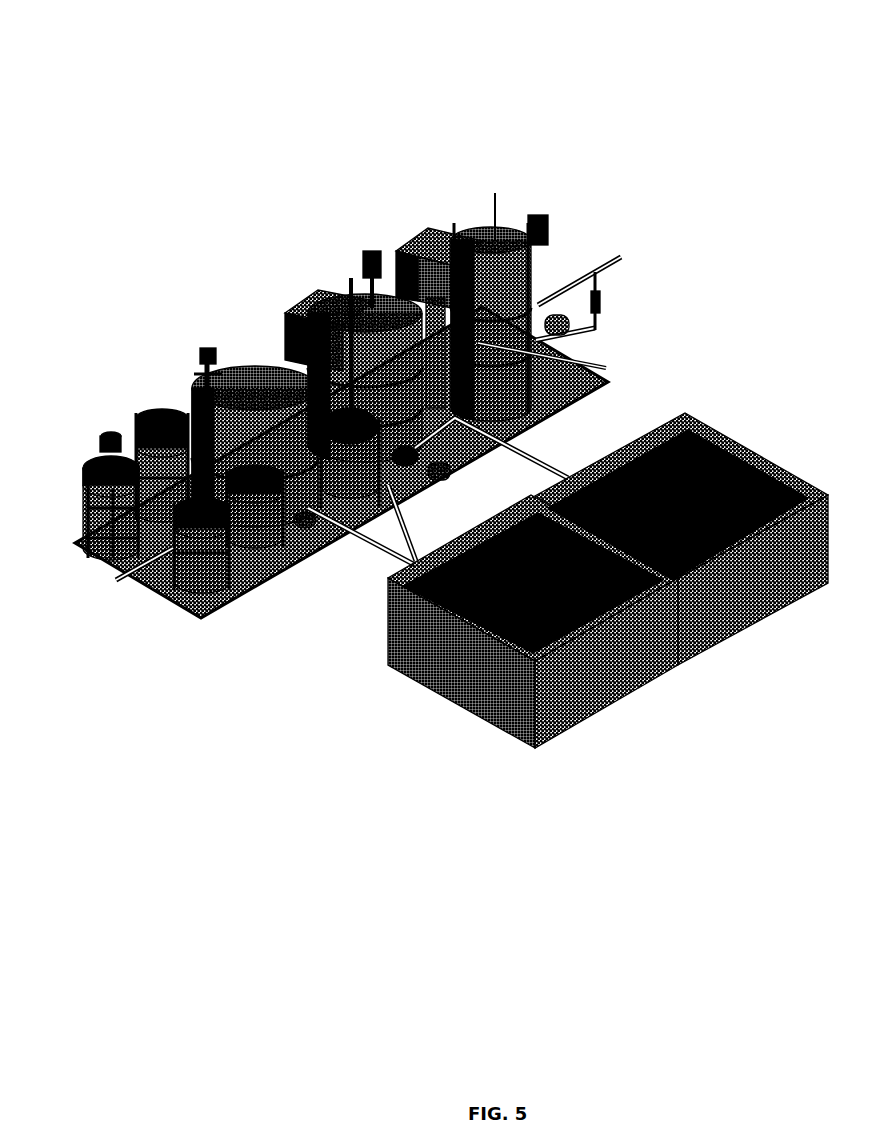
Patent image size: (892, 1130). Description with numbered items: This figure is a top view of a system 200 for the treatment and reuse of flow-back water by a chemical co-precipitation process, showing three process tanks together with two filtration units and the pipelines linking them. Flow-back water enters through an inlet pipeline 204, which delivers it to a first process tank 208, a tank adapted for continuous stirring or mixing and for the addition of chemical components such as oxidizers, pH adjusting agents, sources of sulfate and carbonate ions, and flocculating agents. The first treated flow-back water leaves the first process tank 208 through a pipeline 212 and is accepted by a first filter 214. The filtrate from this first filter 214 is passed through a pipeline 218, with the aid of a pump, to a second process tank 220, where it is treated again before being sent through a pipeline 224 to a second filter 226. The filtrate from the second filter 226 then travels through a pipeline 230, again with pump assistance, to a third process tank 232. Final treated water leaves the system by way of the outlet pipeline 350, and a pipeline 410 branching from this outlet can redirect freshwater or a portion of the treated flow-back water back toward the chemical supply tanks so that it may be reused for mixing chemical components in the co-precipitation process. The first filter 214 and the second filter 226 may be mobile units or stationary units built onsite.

The system 200 is at (665, 72).
The inlet pipeline 204 is at (108, 570).
The first process tank 208 is at (255, 367).
The pipeline 212 is at (360, 533).
The first filter 214 is at (415, 600).
The pipeline 218 is at (423, 473).
The second process tank 220 is at (348, 297).
The pipeline 224 is at (488, 443).
The second filter 226 is at (710, 428).
The pipeline 230 is at (530, 370).
The third process tank 232 is at (477, 232).
The outlet pipeline 350 is at (565, 273).
The pipeline 410 is at (590, 297).